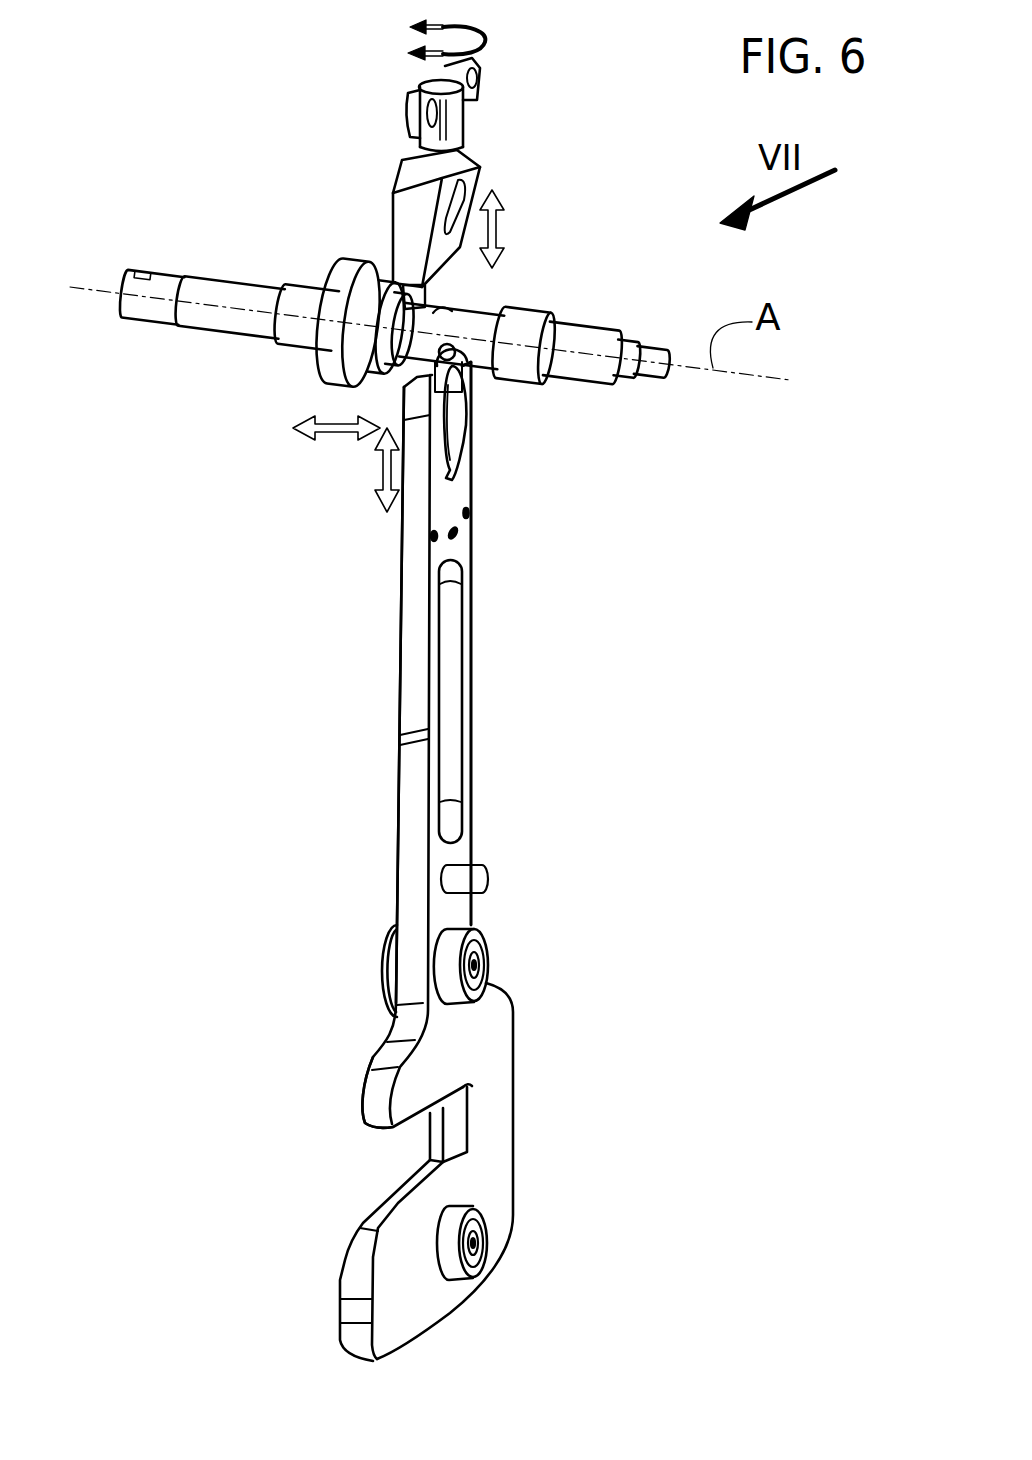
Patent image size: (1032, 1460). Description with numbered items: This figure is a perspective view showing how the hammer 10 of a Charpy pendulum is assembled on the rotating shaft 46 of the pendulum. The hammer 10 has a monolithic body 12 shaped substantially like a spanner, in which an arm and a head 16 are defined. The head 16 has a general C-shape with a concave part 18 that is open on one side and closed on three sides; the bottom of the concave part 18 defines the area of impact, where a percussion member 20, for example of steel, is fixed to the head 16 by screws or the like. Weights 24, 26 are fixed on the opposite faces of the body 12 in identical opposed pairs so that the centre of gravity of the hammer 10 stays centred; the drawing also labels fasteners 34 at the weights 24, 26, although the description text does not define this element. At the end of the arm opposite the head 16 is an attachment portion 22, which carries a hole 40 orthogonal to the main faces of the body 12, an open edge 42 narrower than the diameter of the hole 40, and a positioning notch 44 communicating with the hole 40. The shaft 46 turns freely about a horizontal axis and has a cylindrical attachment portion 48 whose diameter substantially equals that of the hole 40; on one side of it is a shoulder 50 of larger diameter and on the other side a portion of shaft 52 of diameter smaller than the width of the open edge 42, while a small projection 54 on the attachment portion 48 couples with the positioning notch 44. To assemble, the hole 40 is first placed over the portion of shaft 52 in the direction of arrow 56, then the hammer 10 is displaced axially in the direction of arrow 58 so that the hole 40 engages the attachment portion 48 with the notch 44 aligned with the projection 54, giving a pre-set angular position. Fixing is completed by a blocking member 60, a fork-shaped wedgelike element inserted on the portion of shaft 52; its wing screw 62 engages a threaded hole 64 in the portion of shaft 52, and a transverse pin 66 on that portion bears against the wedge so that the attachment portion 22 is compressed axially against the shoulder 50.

The hammer 10 is at (742, 686).
The monolithic body 12 is at (485, 845).
The head 16 is at (520, 1088).
The concave part 18 is at (415, 1122).
The percussion member 20 is at (450, 1123).
The attachment portion 22 is at (460, 467).
The weight 24 is at (380, 938).
The weight 26 is at (490, 1200).
The bearing 34 is at (382, 977).
The hole 40 is at (447, 437).
The open edge 42 is at (472, 410).
The positioning notch 44 is at (460, 487).
The rotating shaft 46 is at (588, 300).
The attachment portion 48 is at (378, 292).
The shoulder 50 is at (340, 282).
The portion of shaft 52 is at (476, 318).
The small projection 54 is at (400, 382).
The arrow 56 is at (383, 470).
The arrow 58 is at (335, 433).
The blocking member 60 is at (500, 165).
The wing screw 62 is at (463, 127).
The threaded hole 64 is at (438, 306).
The transverse pin 66 is at (473, 372).